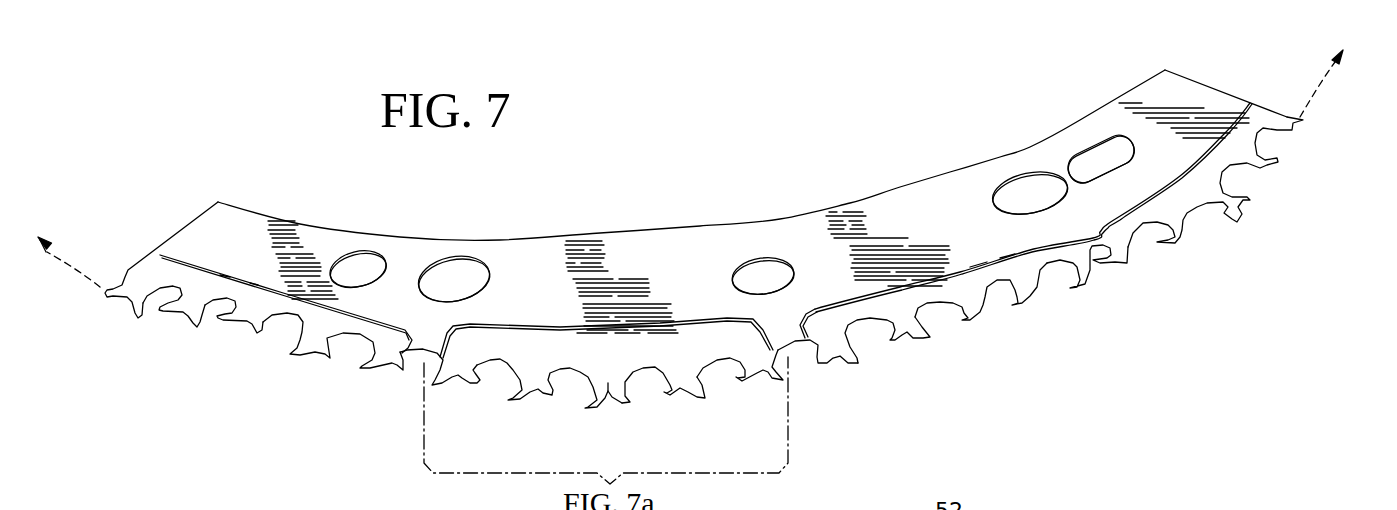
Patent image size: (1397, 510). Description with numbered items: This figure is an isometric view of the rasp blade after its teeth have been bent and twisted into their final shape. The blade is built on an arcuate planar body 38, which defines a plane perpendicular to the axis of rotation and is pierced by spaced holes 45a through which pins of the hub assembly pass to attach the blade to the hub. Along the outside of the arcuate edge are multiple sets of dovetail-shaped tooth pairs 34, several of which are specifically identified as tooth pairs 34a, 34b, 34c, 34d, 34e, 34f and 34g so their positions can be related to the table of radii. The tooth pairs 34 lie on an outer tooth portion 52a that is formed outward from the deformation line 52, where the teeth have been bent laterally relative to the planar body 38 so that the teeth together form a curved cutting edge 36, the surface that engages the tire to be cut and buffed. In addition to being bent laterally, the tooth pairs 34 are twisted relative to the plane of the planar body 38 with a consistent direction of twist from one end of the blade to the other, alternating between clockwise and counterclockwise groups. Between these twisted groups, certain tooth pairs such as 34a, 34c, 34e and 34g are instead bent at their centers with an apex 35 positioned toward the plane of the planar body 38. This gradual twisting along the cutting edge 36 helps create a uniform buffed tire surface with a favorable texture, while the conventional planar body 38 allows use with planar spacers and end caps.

The tooth pairs 34 is at (727, 288).
The tooth pair 34a is at (231, 321).
The tooth pair 34b is at (363, 366).
The tooth pair 34c is at (627, 405).
The tooth pair 34d is at (781, 382).
The tooth pair 34e is at (983, 313).
The tooth pair 34f is at (1085, 278).
The tooth pair 34g is at (1237, 222).
The apex 35 is at (248, 312).
The cutting edge 36 is at (72, 272).
The planar body 38 is at (1210, 100).
The holes 45a is at (372, 252).
The deformation line 52 is at (201, 268).
The outer tooth portion 52a is at (1198, 183).